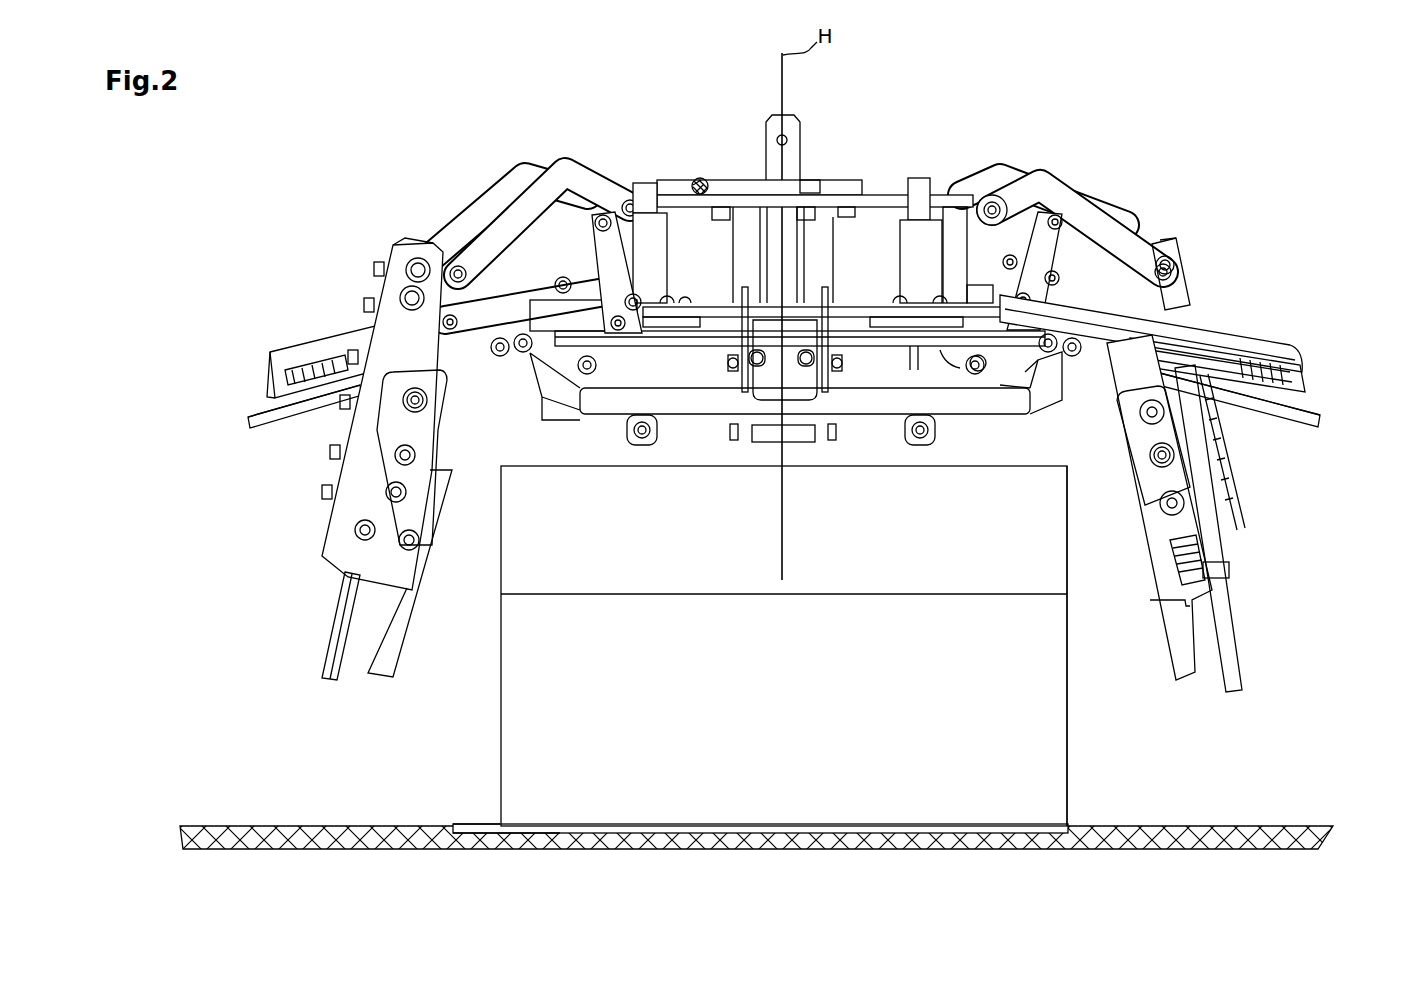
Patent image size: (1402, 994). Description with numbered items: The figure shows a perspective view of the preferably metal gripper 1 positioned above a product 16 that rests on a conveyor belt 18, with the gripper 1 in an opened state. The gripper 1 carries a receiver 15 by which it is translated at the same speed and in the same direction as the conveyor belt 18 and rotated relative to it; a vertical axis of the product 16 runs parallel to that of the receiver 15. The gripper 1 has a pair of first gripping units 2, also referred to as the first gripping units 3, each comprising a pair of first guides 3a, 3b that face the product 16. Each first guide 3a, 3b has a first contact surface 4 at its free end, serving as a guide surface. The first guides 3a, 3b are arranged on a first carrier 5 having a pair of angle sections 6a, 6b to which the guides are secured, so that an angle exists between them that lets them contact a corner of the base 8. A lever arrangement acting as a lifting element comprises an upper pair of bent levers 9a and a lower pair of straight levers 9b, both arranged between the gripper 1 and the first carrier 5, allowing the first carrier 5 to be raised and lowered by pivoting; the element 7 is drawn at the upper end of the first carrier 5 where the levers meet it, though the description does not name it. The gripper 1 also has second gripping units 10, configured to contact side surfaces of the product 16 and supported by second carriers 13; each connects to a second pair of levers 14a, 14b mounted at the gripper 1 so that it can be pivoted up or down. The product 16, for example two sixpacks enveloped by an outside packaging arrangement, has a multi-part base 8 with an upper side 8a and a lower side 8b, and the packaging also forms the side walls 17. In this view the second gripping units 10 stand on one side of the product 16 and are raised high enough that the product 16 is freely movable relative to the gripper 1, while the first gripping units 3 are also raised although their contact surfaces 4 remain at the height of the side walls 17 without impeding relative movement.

The gripper 1 is at (957, 92).
The first gripping unit 2 is at (247, 462).
The first gripping unit 3 is at (262, 402).
The first guide 3a is at (395, 607).
The first guide 3b is at (345, 605).
The first contact surface 4 is at (333, 727).
The first carrier 5 is at (390, 358).
The angle section 6a is at (1137, 500).
The angle section 6b is at (1218, 570).
The pivot joint 7 is at (418, 253).
The base 8 is at (1033, 822).
The upper side 8a is at (500, 822).
The lower side 8b is at (537, 833).
The upper pair of levers 9a is at (995, 165).
The lower pair of levers 9b is at (472, 290).
The second gripping unit 10 is at (287, 320).
The second carrier 13 is at (355, 337).
The second lever 14a is at (1000, 385).
The second lever 14b is at (1025, 372).
The receiver 15 is at (795, 172).
The product 16 is at (780, 690).
The side wall 17 is at (1040, 690).
The conveyor belt 18 is at (1247, 832).